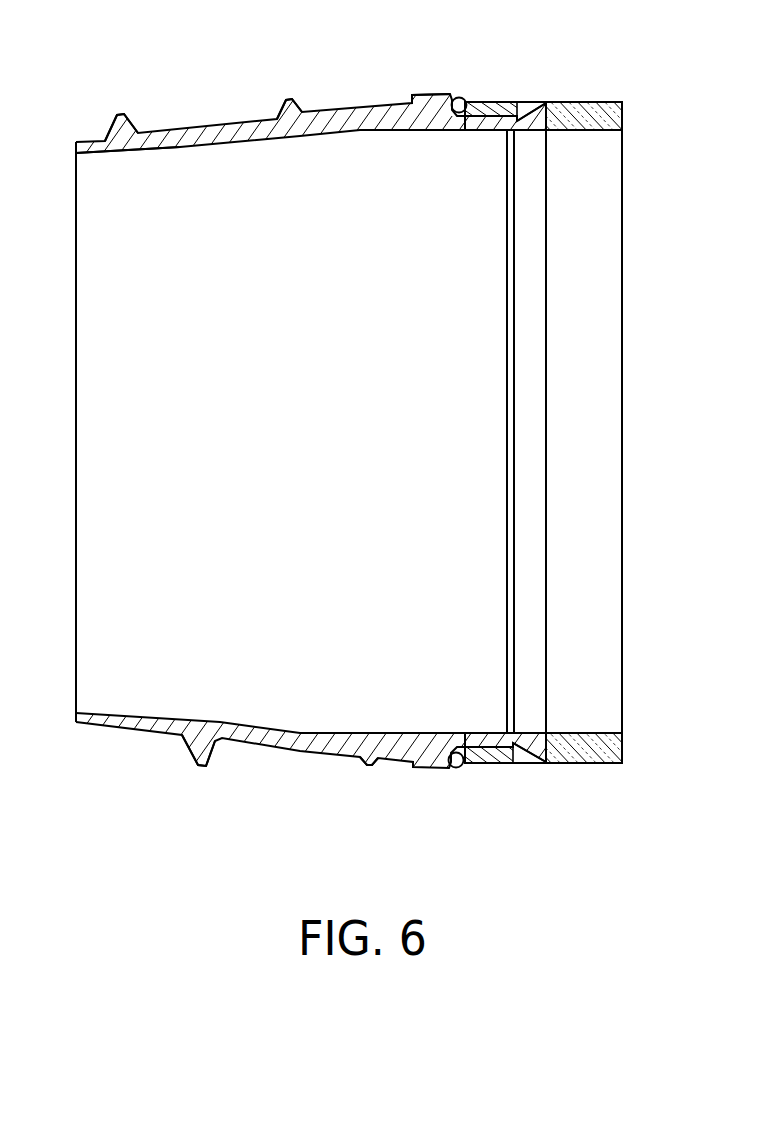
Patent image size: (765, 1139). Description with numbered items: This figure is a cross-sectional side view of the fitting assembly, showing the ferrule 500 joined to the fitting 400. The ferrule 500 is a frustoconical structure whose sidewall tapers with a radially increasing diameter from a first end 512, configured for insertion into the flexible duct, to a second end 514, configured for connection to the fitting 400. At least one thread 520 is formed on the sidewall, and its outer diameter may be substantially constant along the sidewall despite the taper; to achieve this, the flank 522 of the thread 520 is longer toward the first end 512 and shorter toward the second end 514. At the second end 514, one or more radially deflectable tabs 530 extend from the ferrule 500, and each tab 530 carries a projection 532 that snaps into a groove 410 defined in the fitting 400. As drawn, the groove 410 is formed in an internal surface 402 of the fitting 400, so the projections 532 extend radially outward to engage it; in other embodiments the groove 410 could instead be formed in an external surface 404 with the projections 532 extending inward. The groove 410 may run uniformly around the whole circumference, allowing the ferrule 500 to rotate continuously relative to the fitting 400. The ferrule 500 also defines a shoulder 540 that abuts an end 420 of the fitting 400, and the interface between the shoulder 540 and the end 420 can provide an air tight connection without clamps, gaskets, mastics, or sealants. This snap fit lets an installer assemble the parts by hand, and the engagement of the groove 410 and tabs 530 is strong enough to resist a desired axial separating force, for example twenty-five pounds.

The fitting 400 is at (632, 78).
The internal surface 402 is at (550, 122).
The external surface 404 is at (590, 765).
The groove 410 is at (535, 372).
The end 420 is at (466, 108).
The ferrule 500 is at (151, 77).
The first end 512 is at (98, 154).
The second end 514 is at (465, 133).
The thread 520 is at (110, 127).
The flank 522 is at (299, 99).
The tab 530 is at (493, 133).
The projection 532 is at (530, 113).
The shoulder 540 is at (455, 98).